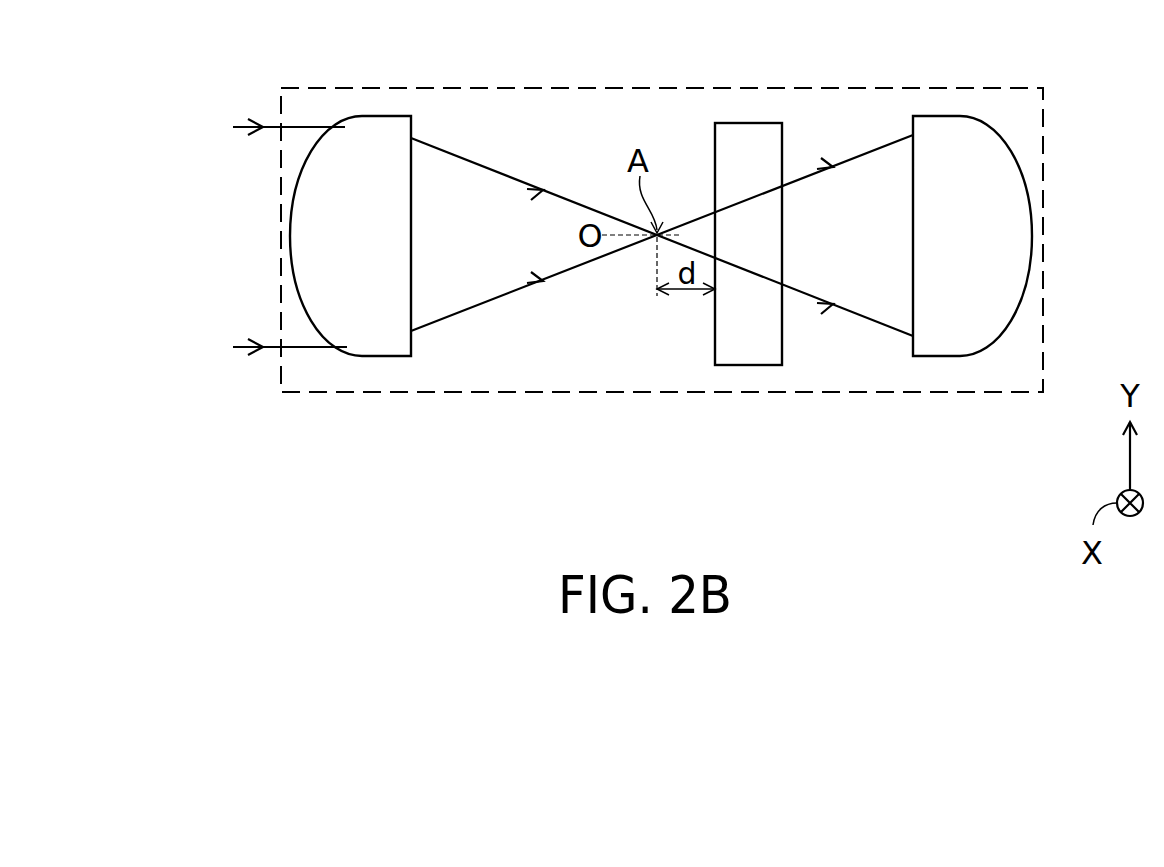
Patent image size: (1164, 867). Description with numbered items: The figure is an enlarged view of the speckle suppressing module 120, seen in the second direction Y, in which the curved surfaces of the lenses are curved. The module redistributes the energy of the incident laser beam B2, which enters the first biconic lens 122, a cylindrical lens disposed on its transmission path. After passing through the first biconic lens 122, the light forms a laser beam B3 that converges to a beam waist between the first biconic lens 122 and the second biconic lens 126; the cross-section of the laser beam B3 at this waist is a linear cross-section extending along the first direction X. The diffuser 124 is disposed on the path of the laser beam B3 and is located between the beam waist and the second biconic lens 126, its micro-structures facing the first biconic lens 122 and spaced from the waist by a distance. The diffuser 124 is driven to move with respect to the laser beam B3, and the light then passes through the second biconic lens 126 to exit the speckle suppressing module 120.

The speckle suppressing module 120 is at (885, 393).
The first biconic lens 122 is at (347, 140).
The diffuser 124 is at (763, 143).
The second biconic lens 126 is at (937, 145).
The laser beam B2 is at (250, 133).
The laser beam B3 is at (432, 135).